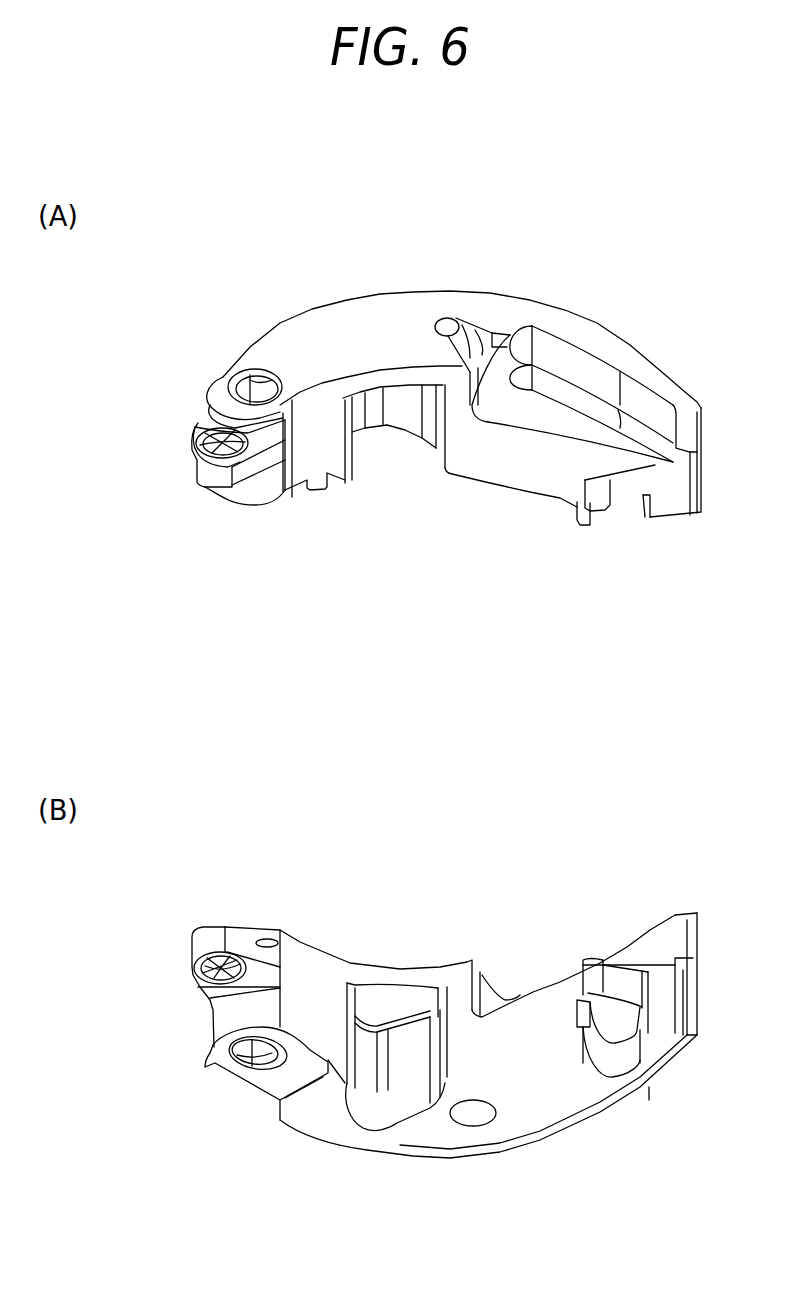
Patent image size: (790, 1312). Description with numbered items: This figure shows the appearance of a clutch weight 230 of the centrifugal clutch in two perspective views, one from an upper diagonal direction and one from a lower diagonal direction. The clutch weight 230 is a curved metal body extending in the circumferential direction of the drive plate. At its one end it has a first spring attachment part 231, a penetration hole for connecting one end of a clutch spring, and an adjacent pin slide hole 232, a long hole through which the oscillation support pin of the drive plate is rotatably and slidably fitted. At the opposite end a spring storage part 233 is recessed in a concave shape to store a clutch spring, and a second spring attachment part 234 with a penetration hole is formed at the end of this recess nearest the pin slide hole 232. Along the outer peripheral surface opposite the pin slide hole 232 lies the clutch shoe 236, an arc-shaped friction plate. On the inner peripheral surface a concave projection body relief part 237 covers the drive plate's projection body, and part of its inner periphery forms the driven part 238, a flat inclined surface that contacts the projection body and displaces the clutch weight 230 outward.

The clutch weight 230 is at (239, 262).
The first spring attachment part 231 is at (223, 437).
The pin slide hole 232 is at (246, 392).
The spring storage part 233 is at (566, 436).
The second spring attachment part 234 is at (455, 318).
The clutch shoe 236 is at (567, 1130).
The projection body relief part 237 is at (357, 412).
The driven part 238 is at (413, 418).